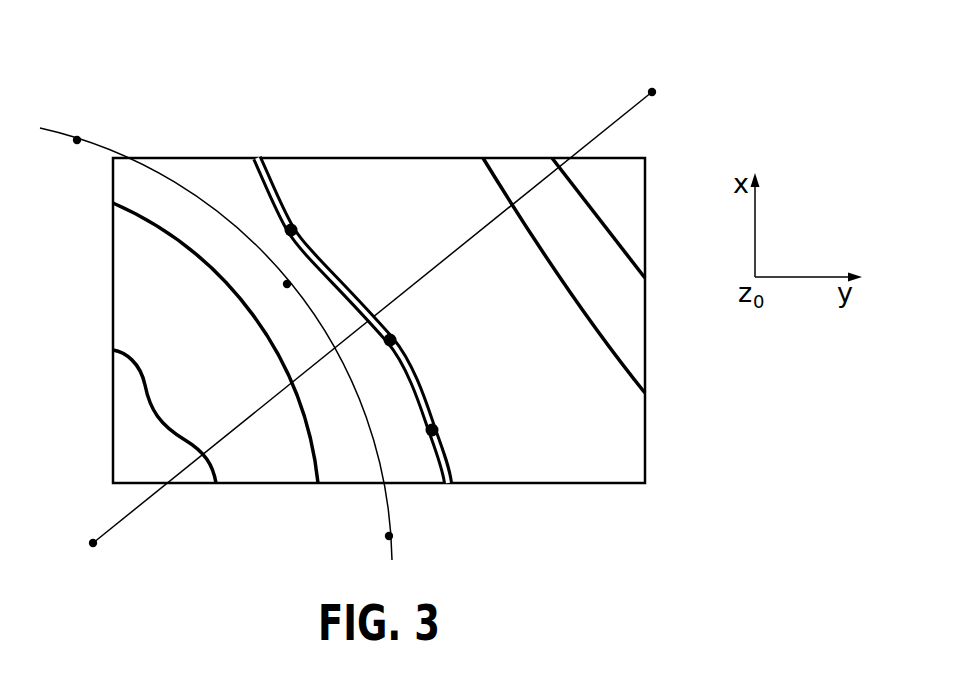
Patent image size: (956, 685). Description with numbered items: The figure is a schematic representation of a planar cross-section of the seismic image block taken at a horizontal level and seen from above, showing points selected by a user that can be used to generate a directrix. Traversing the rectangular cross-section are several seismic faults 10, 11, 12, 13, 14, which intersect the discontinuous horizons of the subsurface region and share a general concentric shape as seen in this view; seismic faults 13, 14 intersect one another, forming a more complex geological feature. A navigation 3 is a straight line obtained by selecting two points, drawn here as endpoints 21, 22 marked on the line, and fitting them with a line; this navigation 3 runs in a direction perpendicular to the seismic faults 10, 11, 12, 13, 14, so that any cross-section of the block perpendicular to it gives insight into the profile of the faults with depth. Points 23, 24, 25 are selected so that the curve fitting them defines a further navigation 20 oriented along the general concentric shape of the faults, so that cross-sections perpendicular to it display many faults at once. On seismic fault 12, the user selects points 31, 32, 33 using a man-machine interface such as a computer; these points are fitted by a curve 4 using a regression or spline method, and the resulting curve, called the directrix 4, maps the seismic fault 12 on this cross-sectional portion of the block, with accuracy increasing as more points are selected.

The navigation 3 is at (149, 516).
The directrix 4 is at (342, 251).
The seismic fault 10 is at (132, 365).
The seismic fault 11 is at (150, 221).
The seismic fault 12 is at (262, 187).
The seismic fault 13 is at (495, 183).
The seismic fault 14 is at (573, 195).
The curved scanning path 20 is at (156, 164).
The start point of straight line 21 is at (93, 547).
The navigation 22 is at (652, 90).
The selected point 23 is at (392, 536).
The selected point 24 is at (287, 284).
The selected point 25 is at (77, 137).
The selected point 31 is at (292, 226).
The selected point 32 is at (390, 340).
The selected point 33 is at (432, 430).